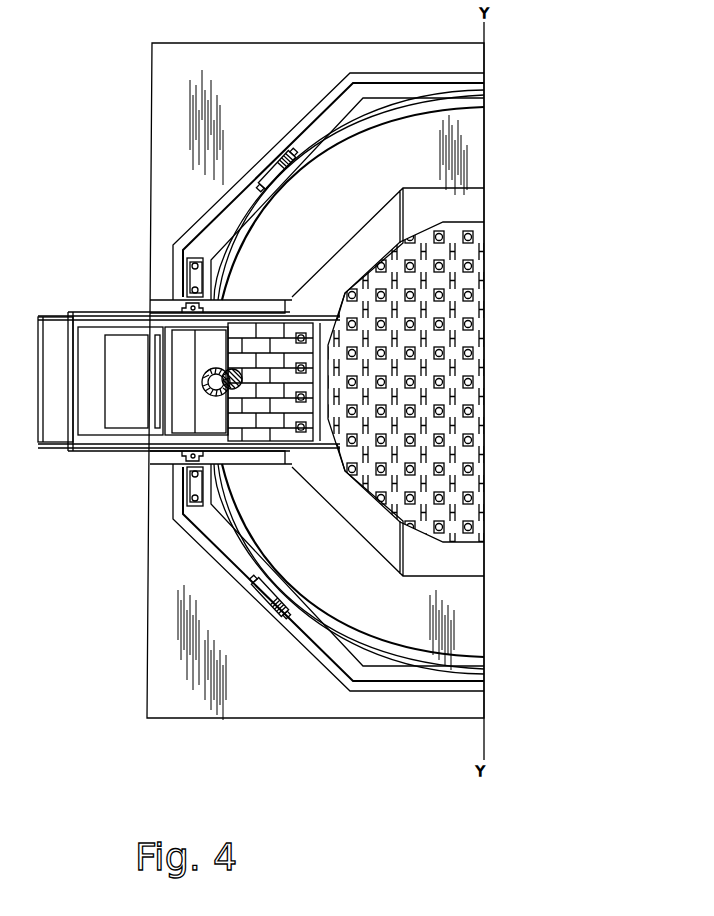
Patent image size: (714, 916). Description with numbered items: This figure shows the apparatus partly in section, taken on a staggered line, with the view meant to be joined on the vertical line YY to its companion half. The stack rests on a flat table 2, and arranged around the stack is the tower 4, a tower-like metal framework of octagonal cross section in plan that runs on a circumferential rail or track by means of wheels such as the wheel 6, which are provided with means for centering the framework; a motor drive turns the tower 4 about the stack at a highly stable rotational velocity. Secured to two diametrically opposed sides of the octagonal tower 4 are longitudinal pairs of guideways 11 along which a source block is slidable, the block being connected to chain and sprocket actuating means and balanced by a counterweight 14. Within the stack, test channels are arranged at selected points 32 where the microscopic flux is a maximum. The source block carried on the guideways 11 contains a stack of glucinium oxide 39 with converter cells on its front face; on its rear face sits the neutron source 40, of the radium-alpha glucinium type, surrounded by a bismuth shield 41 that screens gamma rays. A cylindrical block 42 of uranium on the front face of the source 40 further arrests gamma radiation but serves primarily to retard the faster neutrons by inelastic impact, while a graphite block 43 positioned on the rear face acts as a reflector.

The flat table 2 is at (333, 263).
The tower 4 is at (361, 686).
The wheel 6 is at (272, 172).
The guideways 11 is at (183, 302).
The counterweight 14 is at (188, 275).
The selected points 32 is at (457, 337).
The stack of glucinium oxide 39 is at (263, 400).
The neutron source 40 is at (220, 390).
The bismuth shield 41 is at (215, 387).
The cylindrical block of uranium 42 is at (223, 372).
The graphite block 43 is at (178, 370).